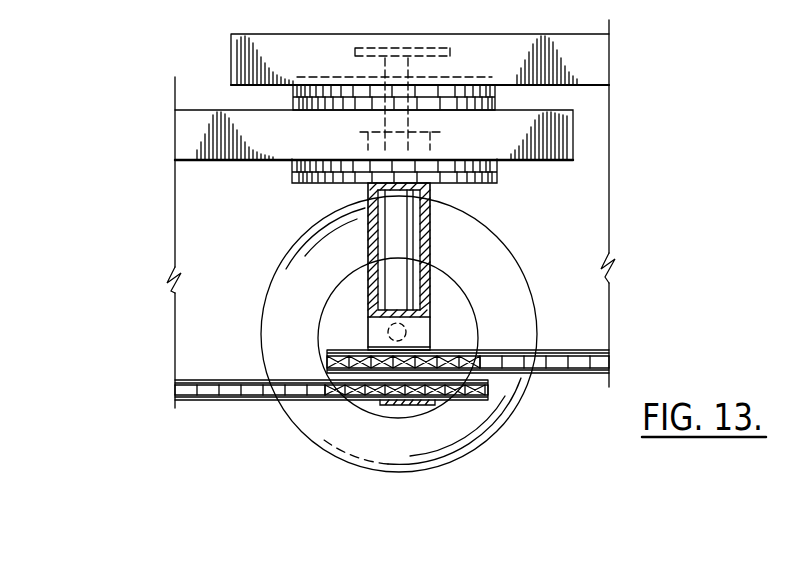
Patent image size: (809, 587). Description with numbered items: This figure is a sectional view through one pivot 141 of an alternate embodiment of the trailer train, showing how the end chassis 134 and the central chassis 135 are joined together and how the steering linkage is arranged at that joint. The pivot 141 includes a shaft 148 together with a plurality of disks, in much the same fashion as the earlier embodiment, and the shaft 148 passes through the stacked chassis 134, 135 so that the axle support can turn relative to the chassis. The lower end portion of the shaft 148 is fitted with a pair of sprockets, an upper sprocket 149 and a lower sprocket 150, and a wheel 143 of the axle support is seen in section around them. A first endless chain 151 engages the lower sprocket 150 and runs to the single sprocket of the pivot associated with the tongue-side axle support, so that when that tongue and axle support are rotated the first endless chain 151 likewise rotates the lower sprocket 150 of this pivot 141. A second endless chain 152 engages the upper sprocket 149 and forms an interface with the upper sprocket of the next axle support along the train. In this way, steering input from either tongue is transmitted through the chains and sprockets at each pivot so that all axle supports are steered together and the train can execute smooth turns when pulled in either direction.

The end chassis 134 is at (187, 132).
The central chassis 135 is at (595, 65).
The pivot 141 is at (628, 143).
The wheel 143 is at (372, 443).
The shaft 148 is at (398, 233).
The upper sprocket 149 is at (336, 350).
The lower sprocket 150 is at (468, 395).
The first endless chain 151 is at (250, 400).
The second endless chain 152 is at (565, 350).